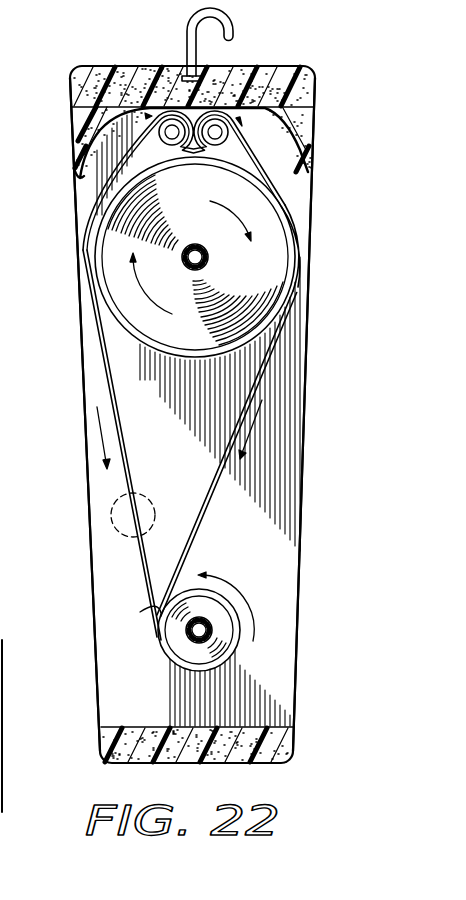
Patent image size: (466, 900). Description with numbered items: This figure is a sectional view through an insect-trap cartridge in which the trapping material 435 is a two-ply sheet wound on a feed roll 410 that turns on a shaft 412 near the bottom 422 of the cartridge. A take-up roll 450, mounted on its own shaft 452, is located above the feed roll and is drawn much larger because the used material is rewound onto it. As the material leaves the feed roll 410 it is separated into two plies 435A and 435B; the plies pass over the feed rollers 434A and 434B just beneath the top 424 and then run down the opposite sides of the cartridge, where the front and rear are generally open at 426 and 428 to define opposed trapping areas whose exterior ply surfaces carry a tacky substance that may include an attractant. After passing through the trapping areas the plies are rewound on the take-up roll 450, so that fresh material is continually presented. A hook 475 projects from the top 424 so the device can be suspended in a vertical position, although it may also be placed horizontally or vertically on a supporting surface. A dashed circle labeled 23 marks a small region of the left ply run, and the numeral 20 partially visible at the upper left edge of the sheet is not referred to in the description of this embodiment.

The tape dispensing device 20 is at (12, 14).
The section indicator 23 is at (140, 500).
The feed roll 410 is at (228, 632).
The shaft 412 is at (193, 648).
The bottom 422 is at (121, 748).
The top 424 is at (148, 52).
The front opening 426 is at (310, 378).
The rear opening 428 is at (78, 376).
The feed roller 434A is at (78, 140).
The feed roller 434B is at (222, 158).
The trapping material 435 is at (148, 612).
The ply 435A is at (118, 430).
The ply 435B is at (204, 504).
The take-up roll 450 is at (307, 262).
The shaft 452 is at (204, 256).
The hook 475 is at (186, 48).